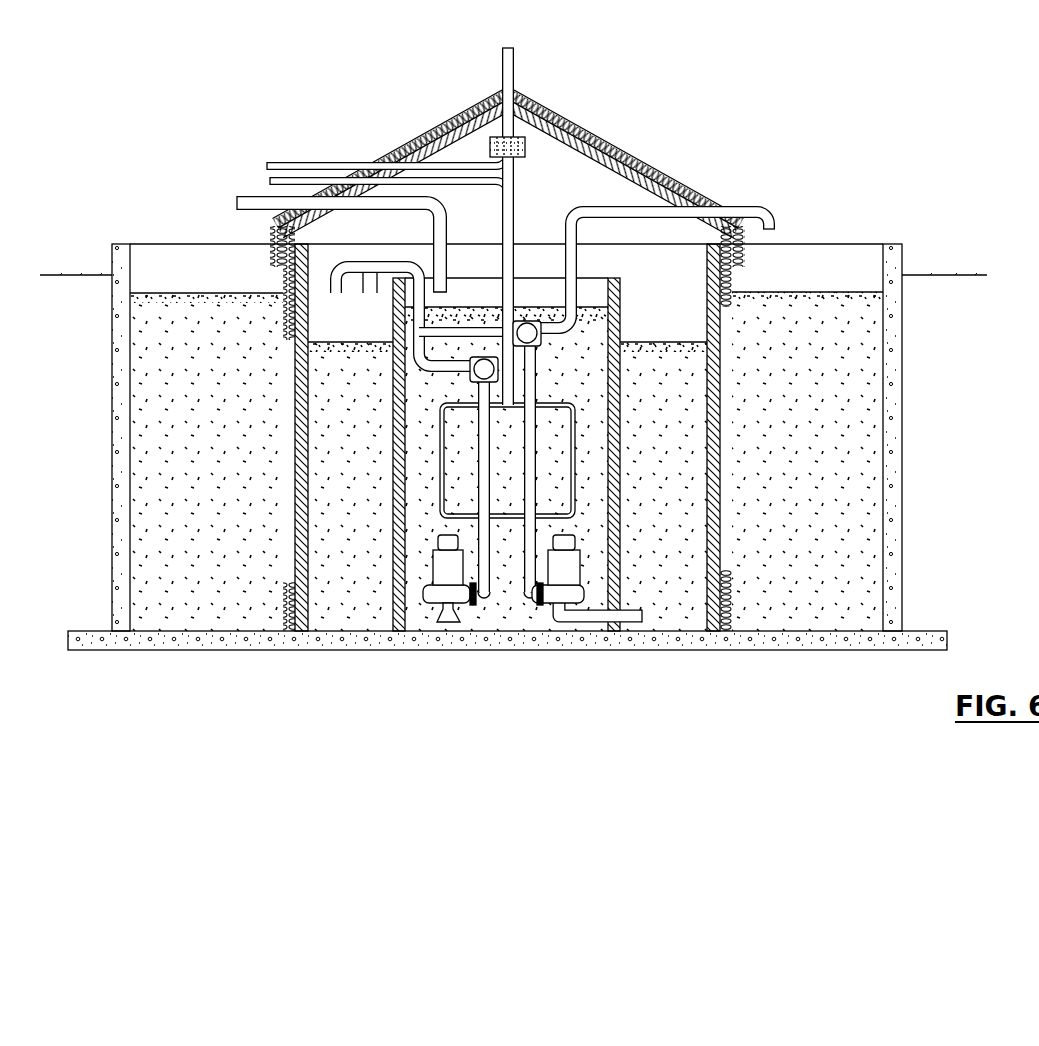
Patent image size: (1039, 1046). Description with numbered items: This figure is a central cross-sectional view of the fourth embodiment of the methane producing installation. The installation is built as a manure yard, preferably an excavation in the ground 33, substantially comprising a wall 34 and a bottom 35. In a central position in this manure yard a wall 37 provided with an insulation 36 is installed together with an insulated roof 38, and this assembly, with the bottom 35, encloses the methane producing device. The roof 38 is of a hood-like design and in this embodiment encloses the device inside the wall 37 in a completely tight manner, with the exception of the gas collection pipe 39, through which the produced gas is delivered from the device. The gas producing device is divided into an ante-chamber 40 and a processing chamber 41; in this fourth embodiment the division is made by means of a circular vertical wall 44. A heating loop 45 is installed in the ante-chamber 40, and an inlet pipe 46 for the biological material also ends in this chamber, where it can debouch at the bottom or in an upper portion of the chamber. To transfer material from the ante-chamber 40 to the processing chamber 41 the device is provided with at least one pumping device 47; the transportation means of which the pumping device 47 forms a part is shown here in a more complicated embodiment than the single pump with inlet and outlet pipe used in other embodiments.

The ground 33 is at (90, 290).
The wall 34 is at (125, 265).
The bottom 35 is at (150, 640).
The insulation 36 is at (283, 320).
The wall 37 is at (296, 287).
The insulated roof 38 is at (410, 140).
The gas collection pipe 39 is at (527, 147).
The ante-chamber 40 is at (413, 593).
The processing chamber 41 is at (303, 262).
The circular vertical wall 44 is at (620, 305).
The heating loop 45 is at (573, 500).
The inlet pipe 46 is at (423, 200).
The pumping device 47 is at (555, 597).